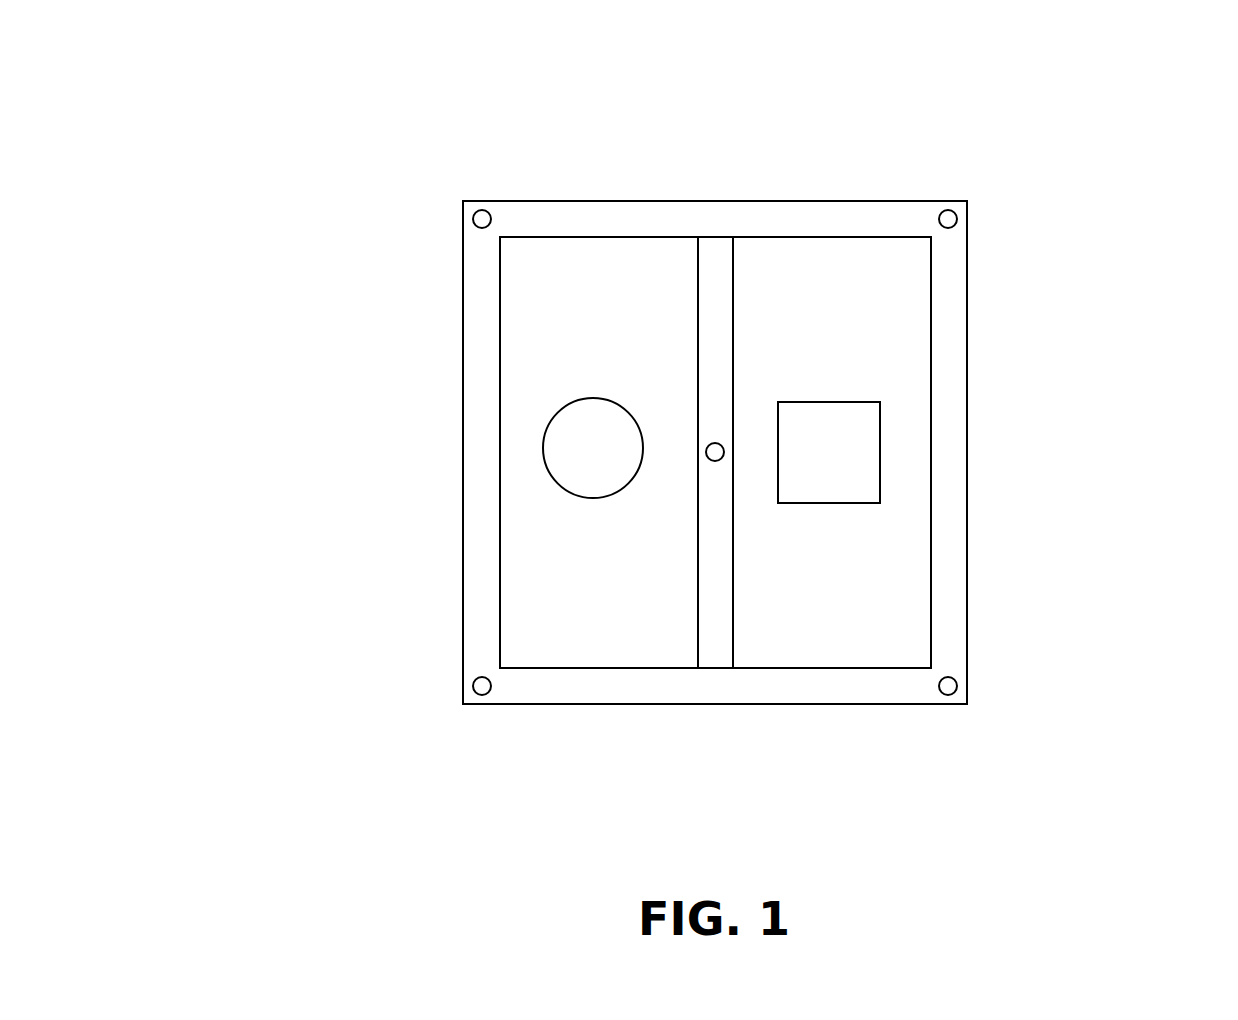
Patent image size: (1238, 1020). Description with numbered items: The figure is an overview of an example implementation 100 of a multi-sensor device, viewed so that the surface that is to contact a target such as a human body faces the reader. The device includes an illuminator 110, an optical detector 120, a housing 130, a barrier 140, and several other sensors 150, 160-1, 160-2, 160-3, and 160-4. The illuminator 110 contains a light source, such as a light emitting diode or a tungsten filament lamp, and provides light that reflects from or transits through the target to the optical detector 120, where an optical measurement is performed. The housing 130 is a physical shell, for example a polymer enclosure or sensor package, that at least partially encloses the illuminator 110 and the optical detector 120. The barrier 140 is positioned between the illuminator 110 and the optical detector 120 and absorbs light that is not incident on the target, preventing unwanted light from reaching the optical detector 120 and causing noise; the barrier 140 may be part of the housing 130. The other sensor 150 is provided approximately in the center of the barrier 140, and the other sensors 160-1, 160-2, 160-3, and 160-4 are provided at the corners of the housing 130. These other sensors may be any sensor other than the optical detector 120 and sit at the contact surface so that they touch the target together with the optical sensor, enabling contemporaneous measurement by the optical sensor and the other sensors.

The example implementation 100 is at (202, 46).
The illuminator 110 is at (701, 117).
The optical detector 120 is at (1104, 349).
The housing 130 is at (1104, 219).
The barrier 140 is at (838, 39).
The other sensor 150 is at (928, 126).
The other sensor 160-1 is at (1096, 112).
The other sensor 160-2 is at (1096, 576).
The other sensor 160-3 is at (271, 576).
The other sensor 160-4 is at (522, 107).